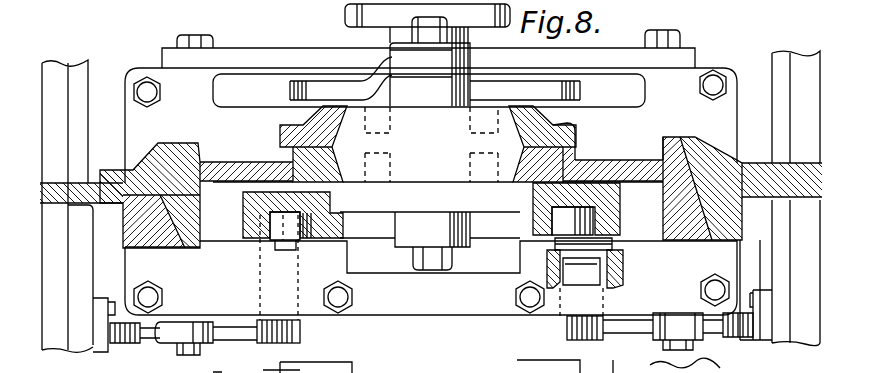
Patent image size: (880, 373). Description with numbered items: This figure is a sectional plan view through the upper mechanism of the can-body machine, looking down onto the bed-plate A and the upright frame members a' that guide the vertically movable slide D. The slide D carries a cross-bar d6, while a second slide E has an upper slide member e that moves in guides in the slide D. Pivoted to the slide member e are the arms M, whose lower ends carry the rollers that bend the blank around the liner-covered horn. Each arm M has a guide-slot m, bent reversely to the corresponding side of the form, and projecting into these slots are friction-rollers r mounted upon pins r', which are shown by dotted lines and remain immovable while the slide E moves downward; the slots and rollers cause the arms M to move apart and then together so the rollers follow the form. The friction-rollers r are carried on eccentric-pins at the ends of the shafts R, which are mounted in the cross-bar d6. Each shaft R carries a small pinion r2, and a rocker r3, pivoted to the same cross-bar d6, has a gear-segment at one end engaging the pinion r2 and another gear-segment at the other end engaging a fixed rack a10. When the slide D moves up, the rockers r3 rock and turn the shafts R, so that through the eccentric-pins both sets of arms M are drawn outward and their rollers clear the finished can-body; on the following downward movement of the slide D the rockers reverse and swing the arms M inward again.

The bed-plate A is at (778, 142).
The upright frame members a' is at (421, 177).
The slide D is at (431, 152).
The slide E is at (438, 144).
The slide member e is at (539, 141).
The arms M is at (578, 88).
The guide-slots m is at (268, 217).
The friction-rollers r is at (444, 234).
The pins r' is at (290, 267).
The shafts R is at (623, 263).
The cross-bar d6 is at (417, 297).
The pinion r2 is at (300, 332).
The rocker r3 is at (227, 328).
The fixed rack a10 is at (110, 340).